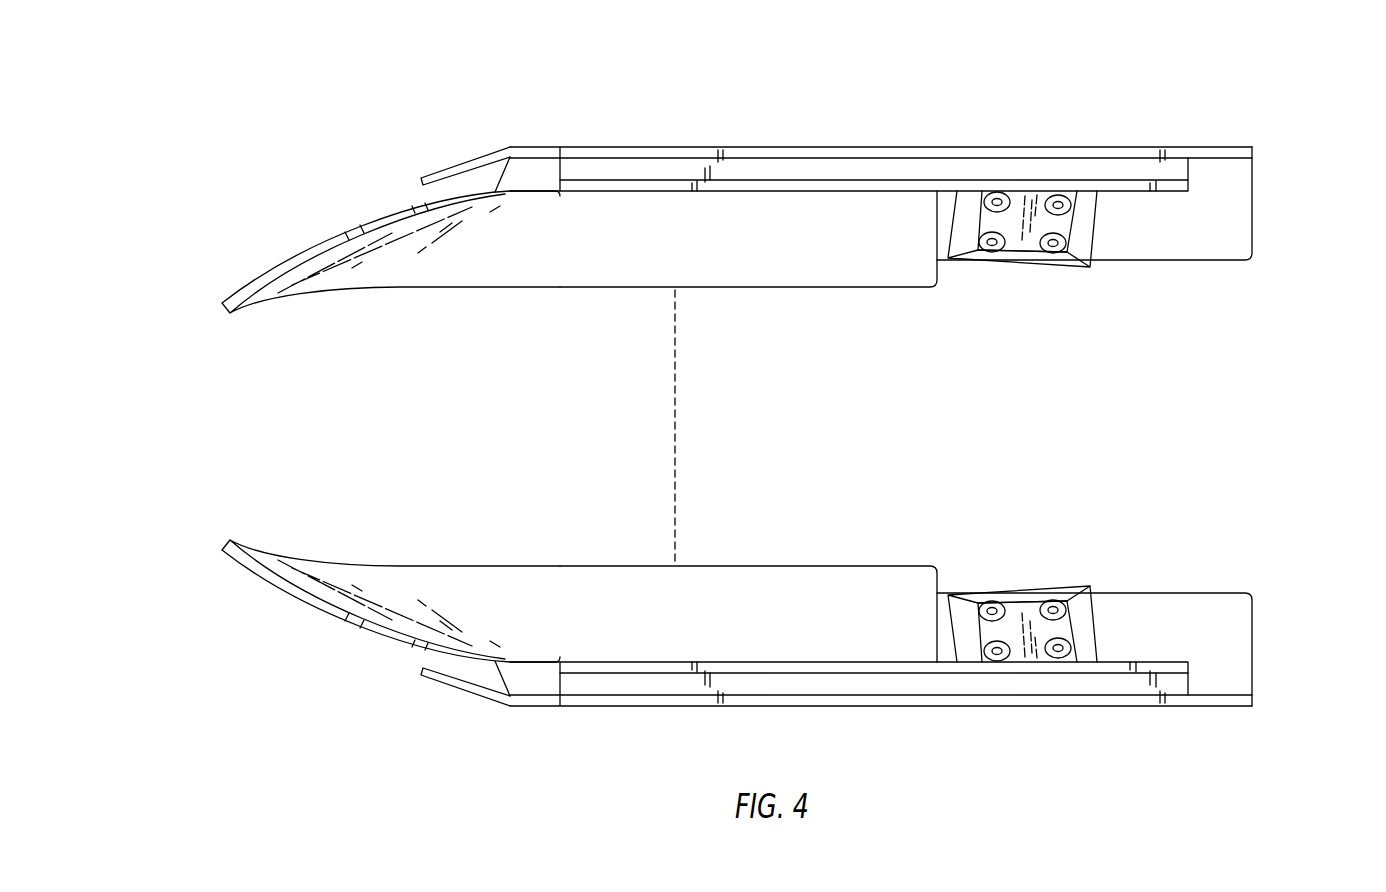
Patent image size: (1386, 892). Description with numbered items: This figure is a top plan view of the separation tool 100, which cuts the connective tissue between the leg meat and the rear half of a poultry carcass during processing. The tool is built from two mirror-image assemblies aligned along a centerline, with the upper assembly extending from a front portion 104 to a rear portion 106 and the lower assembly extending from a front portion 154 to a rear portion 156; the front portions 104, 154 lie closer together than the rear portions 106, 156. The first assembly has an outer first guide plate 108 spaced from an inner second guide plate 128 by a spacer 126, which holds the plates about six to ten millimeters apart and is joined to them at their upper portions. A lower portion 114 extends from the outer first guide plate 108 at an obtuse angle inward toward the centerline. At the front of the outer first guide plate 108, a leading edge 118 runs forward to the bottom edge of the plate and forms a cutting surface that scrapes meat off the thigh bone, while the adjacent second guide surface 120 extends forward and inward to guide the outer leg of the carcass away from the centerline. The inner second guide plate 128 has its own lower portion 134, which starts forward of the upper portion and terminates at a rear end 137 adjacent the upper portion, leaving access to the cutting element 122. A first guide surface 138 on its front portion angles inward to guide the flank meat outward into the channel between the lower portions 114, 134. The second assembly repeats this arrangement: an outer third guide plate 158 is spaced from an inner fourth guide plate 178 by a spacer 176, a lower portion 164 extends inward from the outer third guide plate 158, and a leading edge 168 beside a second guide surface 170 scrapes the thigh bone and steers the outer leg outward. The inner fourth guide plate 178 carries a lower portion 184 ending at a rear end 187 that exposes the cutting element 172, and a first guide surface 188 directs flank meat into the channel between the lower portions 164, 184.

The separation tool 100 is at (196, 424).
The front portion 104 is at (218, 146).
The rear portion 106 is at (1150, 194).
The outer first guide plate 108 is at (843, 147).
The lower portion 114 is at (1178, 237).
The leading edge 118 is at (500, 176).
The second guide surface 120 is at (441, 168).
The cutting element 122 is at (1025, 265).
The spacer 126 is at (912, 165).
The inner second guide plate 128 is at (615, 178).
The lower portion 134 is at (838, 263).
The rear end 137 is at (952, 310).
The first guide surface 138 is at (270, 276).
The front portion 154 is at (288, 716).
The rear portion 156 is at (1141, 624).
The outer third guide plate 158 is at (872, 708).
The lower portion 164 is at (1178, 612).
The leading edge 168 is at (465, 658).
The second guide surface 170 is at (455, 690).
The cutting element 172 is at (1025, 592).
The spacer 176 is at (960, 688).
The inner fourth guide plate 178 is at (745, 663).
The lower portion 184 is at (838, 590).
The rear end 187 is at (952, 541).
The first guide surface 188 is at (299, 600).